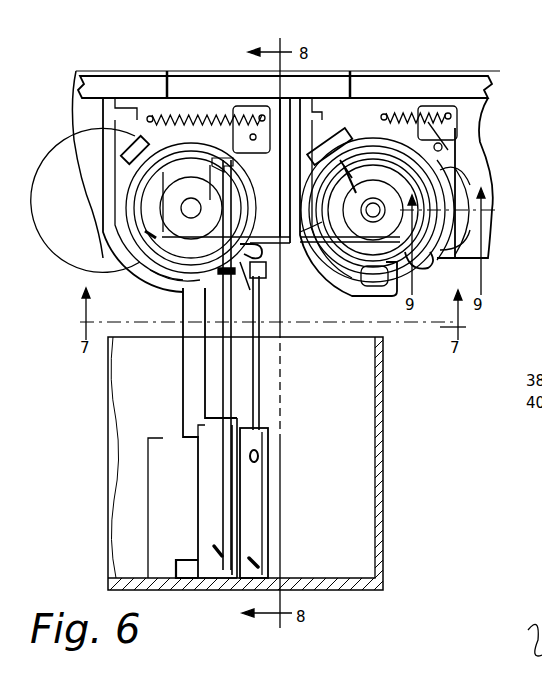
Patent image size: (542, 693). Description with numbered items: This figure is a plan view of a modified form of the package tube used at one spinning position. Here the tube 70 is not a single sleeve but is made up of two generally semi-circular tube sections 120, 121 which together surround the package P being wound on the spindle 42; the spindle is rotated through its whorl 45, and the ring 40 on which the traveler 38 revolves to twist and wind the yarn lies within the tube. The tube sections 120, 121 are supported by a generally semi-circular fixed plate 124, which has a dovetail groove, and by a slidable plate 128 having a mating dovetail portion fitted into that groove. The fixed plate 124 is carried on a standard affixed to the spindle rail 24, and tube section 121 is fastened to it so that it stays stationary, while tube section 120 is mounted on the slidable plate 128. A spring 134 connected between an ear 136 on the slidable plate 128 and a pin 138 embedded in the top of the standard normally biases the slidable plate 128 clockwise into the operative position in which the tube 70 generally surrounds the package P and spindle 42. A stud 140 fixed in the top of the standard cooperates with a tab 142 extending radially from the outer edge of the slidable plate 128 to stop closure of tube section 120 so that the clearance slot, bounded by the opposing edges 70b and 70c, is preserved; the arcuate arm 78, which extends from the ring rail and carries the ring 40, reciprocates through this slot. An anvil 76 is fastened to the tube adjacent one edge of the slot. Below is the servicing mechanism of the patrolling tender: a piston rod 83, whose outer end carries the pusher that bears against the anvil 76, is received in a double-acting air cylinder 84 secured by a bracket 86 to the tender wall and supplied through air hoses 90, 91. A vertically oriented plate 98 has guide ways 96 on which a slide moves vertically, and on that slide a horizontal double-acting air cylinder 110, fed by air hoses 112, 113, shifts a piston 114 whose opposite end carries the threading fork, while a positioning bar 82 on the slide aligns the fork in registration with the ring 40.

The spindle rail 24 is at (92, 168).
The traveler 38 is at (445, 166).
The ring 40 is at (450, 184).
The spindle 42 is at (182, 207).
The whorl 45 is at (178, 222).
The tube 70 is at (487, 183).
The slot edge 70b is at (261, 282).
The trailing edge of slot 70c is at (186, 294).
The anvil 76 is at (249, 256).
The arcuate arm 78 is at (103, 117).
The positioning bar 82 is at (183, 350).
The piston rod 83 is at (258, 372).
The double-acting air cylinder 84 is at (258, 492).
The bracket 86 is at (272, 585).
The air hose 90 is at (260, 456).
The air hose 91 is at (258, 562).
The guide ways 96 is at (182, 548).
The vertically oriented plate 98 is at (160, 440).
The double-acting air cylinder 110 is at (222, 496).
The air hose 112 is at (215, 548).
The air hose 113 is at (183, 434).
The piston 114 is at (224, 382).
The tube section 120 is at (478, 232).
The tube section 121 is at (128, 236).
The fixed plate 124 is at (323, 133).
The slidable plate 128 is at (362, 136).
The spring 134 is at (182, 120).
The ear 136 is at (150, 116).
The pin 138 is at (262, 115).
The stud 140 is at (447, 150).
The tab 142 is at (444, 146).
The package P is at (352, 268).